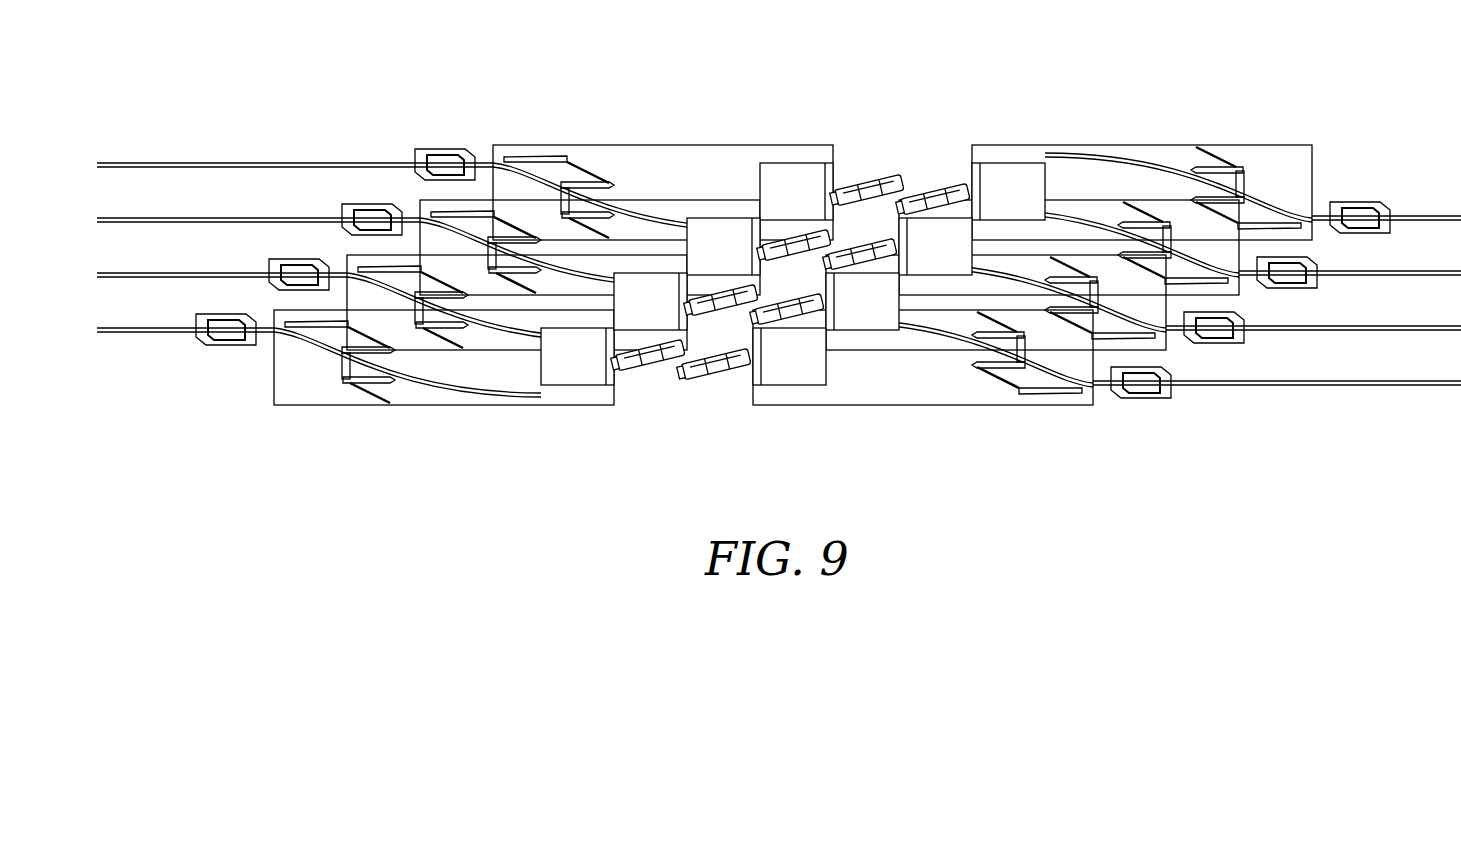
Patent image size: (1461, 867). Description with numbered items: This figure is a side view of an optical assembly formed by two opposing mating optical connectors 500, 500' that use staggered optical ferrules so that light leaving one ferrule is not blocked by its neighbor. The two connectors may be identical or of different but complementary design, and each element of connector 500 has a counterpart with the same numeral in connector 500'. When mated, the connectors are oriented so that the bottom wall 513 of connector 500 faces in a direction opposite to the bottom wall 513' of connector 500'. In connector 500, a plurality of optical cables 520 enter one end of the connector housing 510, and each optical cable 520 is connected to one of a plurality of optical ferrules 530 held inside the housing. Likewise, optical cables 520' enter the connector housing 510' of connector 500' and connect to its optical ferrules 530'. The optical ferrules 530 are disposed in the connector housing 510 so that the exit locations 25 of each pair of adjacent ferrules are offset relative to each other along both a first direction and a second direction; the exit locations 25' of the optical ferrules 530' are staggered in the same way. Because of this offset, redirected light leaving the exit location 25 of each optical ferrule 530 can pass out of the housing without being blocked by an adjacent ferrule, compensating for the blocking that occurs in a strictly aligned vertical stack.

The optical connector 500 is at (1068, 263).
The mating optical connector 500' is at (500, 252).
The connector housing 510 is at (1032, 269).
The connector housing 510' is at (553, 281).
The bottom wall 513 is at (1142, 152).
The bottom wall 513' is at (444, 399).
The optical cable 520 is at (1277, 264).
The optical cable 520' is at (295, 215).
The optical ferrule 530 is at (786, 364).
The optical ferrule 530' is at (793, 189).
The exit location 25 is at (932, 157).
The exit location 25' is at (647, 395).